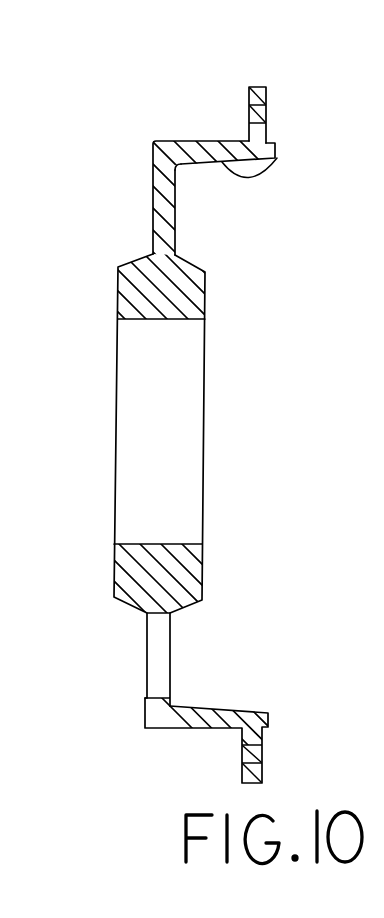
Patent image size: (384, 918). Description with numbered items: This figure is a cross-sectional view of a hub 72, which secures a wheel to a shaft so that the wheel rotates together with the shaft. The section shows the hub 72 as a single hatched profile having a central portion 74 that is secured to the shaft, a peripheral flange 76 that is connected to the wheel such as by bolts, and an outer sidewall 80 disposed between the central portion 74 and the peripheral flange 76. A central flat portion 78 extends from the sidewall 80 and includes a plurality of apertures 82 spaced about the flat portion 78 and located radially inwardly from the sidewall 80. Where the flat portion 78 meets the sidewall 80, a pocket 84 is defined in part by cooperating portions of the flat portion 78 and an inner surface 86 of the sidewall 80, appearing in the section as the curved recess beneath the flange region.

The hub 72 is at (192, 459).
The central portion 74 is at (210, 284).
The peripheral flange 76 is at (266, 87).
The central flat portion 78 is at (175, 213).
The outer sidewall 80 is at (193, 150).
The apertures 82 is at (170, 653).
The pocket 84 is at (272, 161).
The inner surface 86 is at (200, 168).